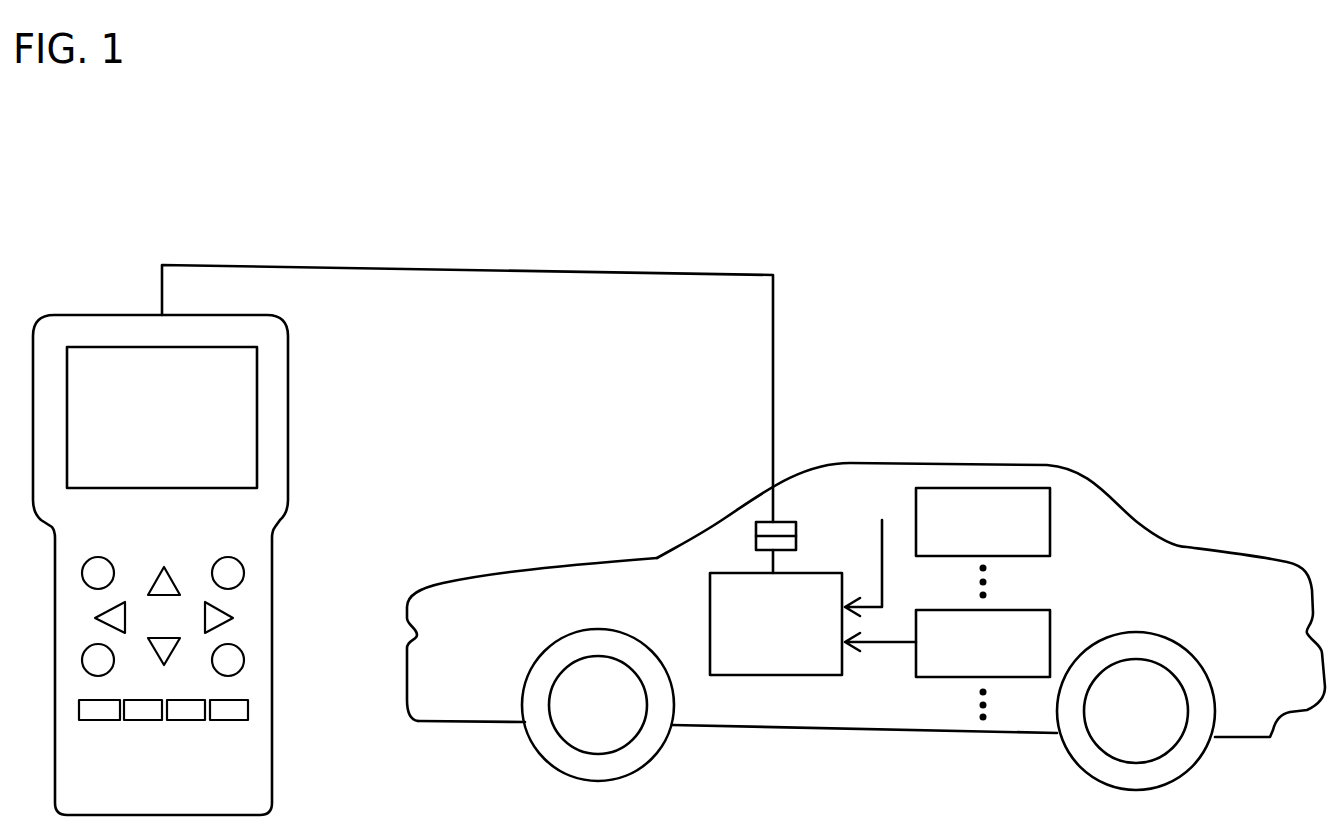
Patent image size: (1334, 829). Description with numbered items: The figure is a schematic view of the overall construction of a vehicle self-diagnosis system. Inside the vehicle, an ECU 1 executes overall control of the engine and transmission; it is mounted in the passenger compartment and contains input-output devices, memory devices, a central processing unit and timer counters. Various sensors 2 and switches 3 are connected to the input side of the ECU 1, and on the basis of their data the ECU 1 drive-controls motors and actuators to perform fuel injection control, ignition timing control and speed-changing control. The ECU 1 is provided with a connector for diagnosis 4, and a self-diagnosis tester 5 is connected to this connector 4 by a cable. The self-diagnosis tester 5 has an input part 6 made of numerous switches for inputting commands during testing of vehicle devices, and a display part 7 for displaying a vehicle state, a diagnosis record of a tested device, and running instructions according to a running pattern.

The ECU 1 is at (738, 673).
The sensors 2 is at (1050, 508).
The switches 3 is at (1050, 623).
The connector for diagnosis 4 is at (755, 533).
The self-diagnosis tester 5 is at (343, 498).
The input part 6 is at (265, 630).
The display part 7 is at (238, 413).